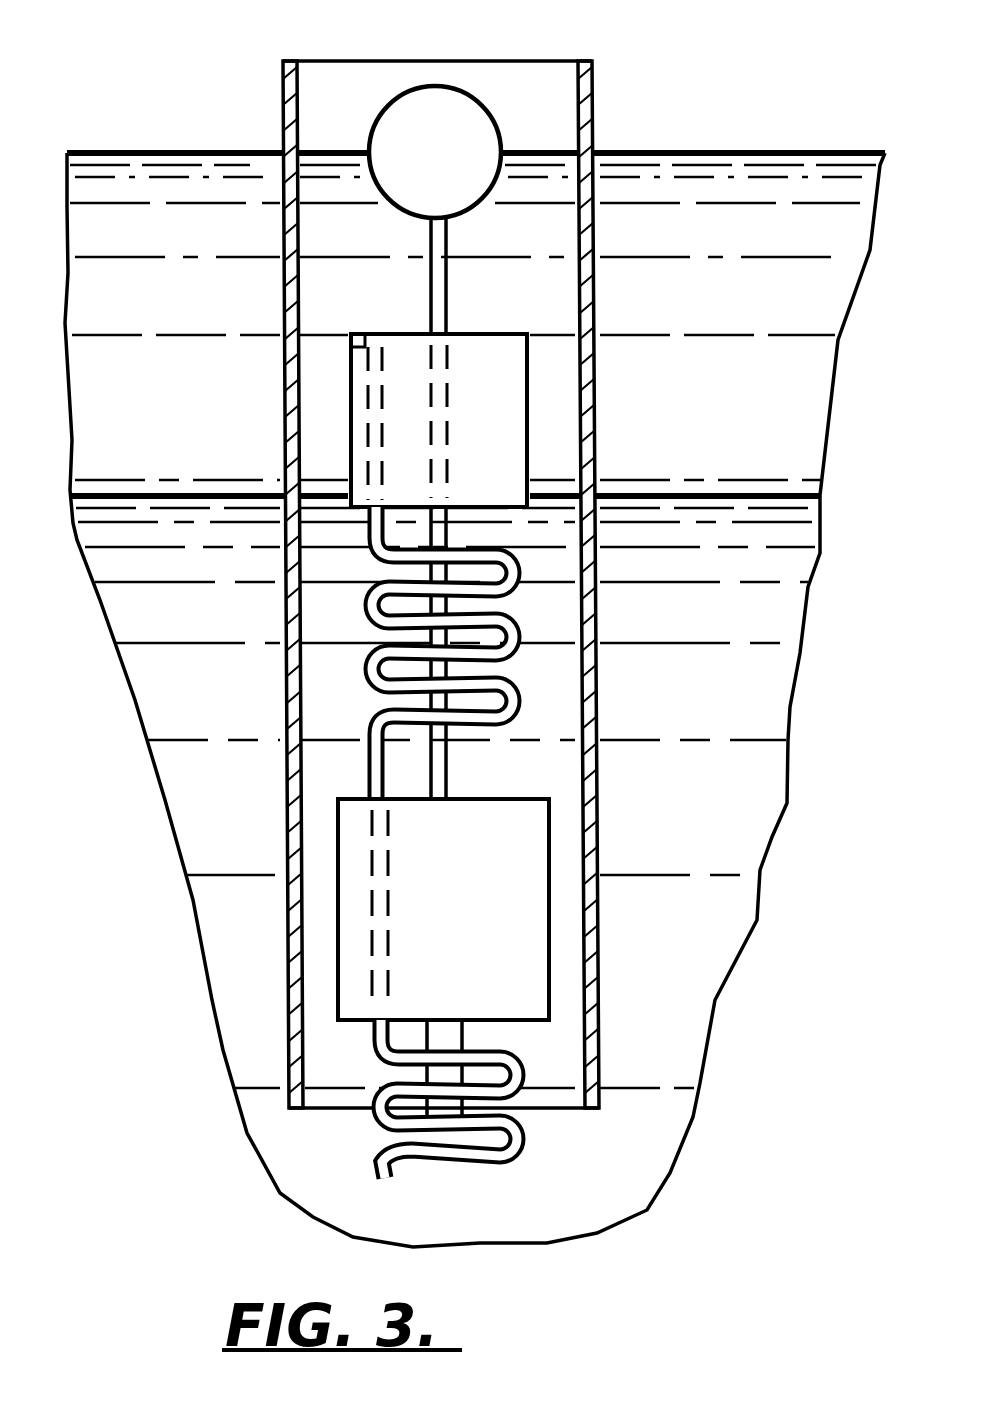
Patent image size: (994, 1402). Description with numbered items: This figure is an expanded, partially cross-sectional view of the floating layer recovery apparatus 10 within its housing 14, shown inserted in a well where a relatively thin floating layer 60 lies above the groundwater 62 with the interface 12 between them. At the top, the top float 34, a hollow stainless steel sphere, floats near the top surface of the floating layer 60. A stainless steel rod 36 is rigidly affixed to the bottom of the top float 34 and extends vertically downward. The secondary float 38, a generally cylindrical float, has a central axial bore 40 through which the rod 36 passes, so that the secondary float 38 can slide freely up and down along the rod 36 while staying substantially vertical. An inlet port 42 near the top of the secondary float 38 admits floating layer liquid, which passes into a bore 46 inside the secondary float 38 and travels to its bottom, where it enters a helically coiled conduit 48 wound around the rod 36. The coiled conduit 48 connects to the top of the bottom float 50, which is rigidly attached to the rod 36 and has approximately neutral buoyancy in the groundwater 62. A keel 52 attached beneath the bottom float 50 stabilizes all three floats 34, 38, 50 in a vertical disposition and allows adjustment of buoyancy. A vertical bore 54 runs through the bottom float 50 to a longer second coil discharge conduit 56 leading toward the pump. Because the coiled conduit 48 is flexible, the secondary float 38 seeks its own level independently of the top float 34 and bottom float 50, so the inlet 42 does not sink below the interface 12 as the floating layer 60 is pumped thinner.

The floating layer recovery apparatus 10 is at (230, 102).
The interface 12 is at (730, 492).
The housing 14 is at (593, 182).
The top float 34 is at (458, 107).
The rod 36 is at (447, 268).
The secondary float 38 is at (527, 392).
The central axial bore 40 is at (448, 376).
The inlet port 42 is at (354, 333).
The bore 46 is at (366, 431).
The helically coiled conduit 48 is at (505, 696).
The bottom float 50 is at (549, 920).
The keel 52 is at (450, 1020).
The vertical bore 54 is at (390, 880).
The second coil discharge conduit 56 is at (506, 1140).
The floating layer 60 is at (808, 291).
The groundwater 62 is at (778, 627).